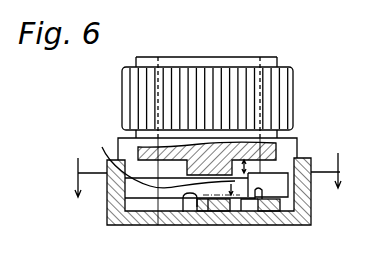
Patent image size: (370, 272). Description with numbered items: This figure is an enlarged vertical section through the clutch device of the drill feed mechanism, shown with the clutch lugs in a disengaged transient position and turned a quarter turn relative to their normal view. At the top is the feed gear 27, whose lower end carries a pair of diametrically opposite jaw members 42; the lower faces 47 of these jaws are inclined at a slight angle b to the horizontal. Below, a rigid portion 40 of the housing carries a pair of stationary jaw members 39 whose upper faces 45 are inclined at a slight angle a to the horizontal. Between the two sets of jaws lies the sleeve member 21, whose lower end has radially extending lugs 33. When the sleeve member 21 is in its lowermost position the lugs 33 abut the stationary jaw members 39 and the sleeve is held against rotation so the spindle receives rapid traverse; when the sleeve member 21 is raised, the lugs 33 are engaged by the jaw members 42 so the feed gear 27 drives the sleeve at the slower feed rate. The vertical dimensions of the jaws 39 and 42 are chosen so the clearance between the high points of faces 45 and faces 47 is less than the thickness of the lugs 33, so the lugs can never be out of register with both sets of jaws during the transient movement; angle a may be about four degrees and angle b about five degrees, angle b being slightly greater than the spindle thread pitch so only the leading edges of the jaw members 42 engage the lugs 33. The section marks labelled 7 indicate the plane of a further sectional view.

The feed gear 27 is at (283, 88).
The lower faces 47 is at (159, 159).
The lugs 33 is at (133, 188).
The jaw members 42 is at (240, 160).
The rigid portion 40 is at (304, 199).
The upper faces 45 is at (184, 207).
The stationary jaw members 39 is at (212, 212).
The sleeve member 21 is at (272, 213).
The angle a is at (242, 197).
The angle b is at (258, 168).
The section line 7- 7 is at (212, 175).